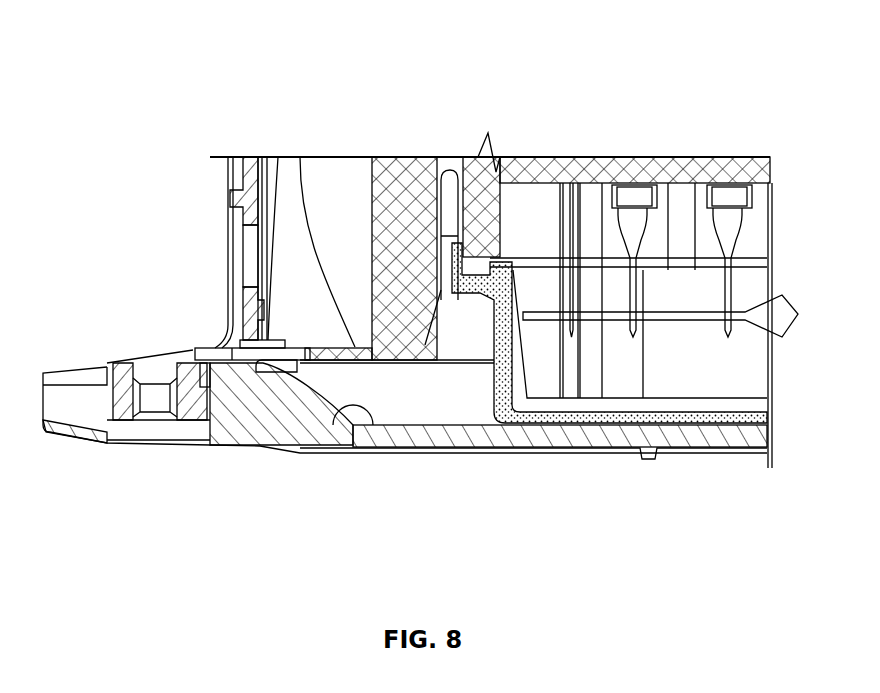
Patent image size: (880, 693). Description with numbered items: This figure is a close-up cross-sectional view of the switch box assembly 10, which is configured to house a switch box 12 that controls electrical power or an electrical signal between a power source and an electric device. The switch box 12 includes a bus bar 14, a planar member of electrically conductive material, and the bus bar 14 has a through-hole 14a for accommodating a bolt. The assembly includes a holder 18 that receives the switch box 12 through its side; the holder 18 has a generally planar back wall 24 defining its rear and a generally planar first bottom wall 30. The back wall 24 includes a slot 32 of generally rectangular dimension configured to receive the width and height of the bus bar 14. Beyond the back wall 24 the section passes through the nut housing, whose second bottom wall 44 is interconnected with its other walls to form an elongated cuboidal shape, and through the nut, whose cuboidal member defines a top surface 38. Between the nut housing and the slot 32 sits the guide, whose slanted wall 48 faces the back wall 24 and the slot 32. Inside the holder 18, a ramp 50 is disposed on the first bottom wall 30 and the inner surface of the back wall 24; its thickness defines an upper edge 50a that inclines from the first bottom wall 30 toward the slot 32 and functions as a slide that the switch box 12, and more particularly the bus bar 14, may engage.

The switch box assembly 10 is at (739, 112).
The switch box 12 is at (368, 225).
The bus bar 14 is at (300, 157).
The through-hole 14a is at (280, 157).
The holder 18 is at (217, 192).
The back wall 24 is at (230, 240).
The first bottom wall 30 is at (543, 455).
The slot 32 is at (232, 345).
The top surface 38 is at (117, 363).
The second bottom wall 44 is at (75, 444).
The slanted wall 48 is at (288, 374).
The ramp 50 is at (262, 418).
The upper edge 50a is at (373, 425).